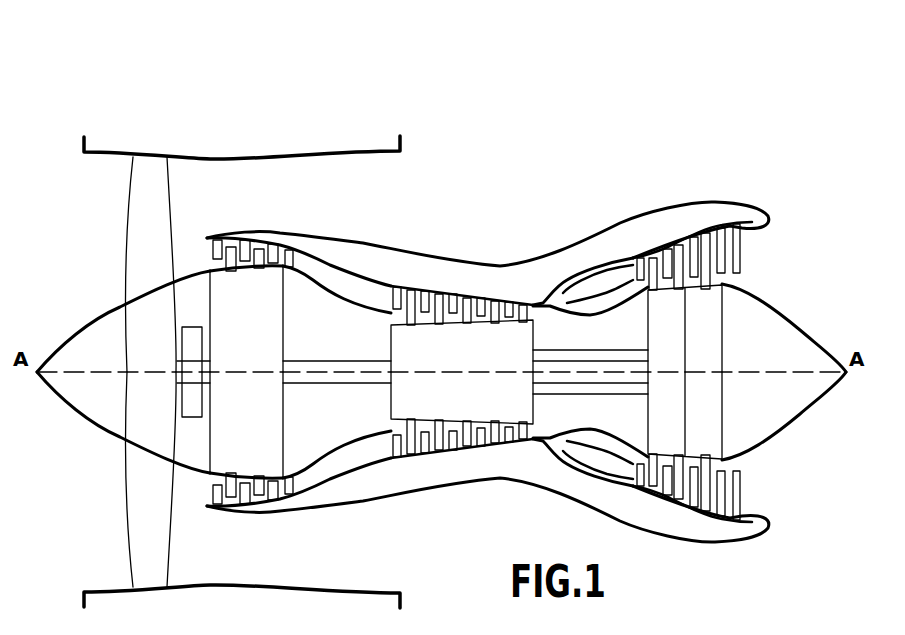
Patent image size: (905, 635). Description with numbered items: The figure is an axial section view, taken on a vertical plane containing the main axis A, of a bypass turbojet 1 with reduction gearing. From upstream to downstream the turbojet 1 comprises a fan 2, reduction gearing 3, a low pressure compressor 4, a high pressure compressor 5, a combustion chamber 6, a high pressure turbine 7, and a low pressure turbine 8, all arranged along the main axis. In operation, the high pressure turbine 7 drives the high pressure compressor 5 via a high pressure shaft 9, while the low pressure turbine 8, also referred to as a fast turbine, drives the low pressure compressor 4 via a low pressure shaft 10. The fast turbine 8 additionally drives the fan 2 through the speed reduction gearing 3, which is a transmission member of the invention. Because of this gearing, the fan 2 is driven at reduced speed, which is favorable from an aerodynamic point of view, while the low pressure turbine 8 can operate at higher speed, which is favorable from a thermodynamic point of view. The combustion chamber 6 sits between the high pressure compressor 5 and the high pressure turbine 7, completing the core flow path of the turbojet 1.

The turbojet 1 is at (533, 118).
The fan 2 is at (147, 217).
The reduction gearing 3 is at (187, 345).
The low pressure compressor 4 is at (248, 240).
The high pressure compressor 5 is at (438, 278).
The combustion chamber 6 is at (578, 283).
The high pressure turbine 7 is at (668, 240).
The low pressure turbine 8 is at (704, 186).
The high pressure shaft 9 is at (588, 350).
The low pressure shaft 10 is at (323, 366).